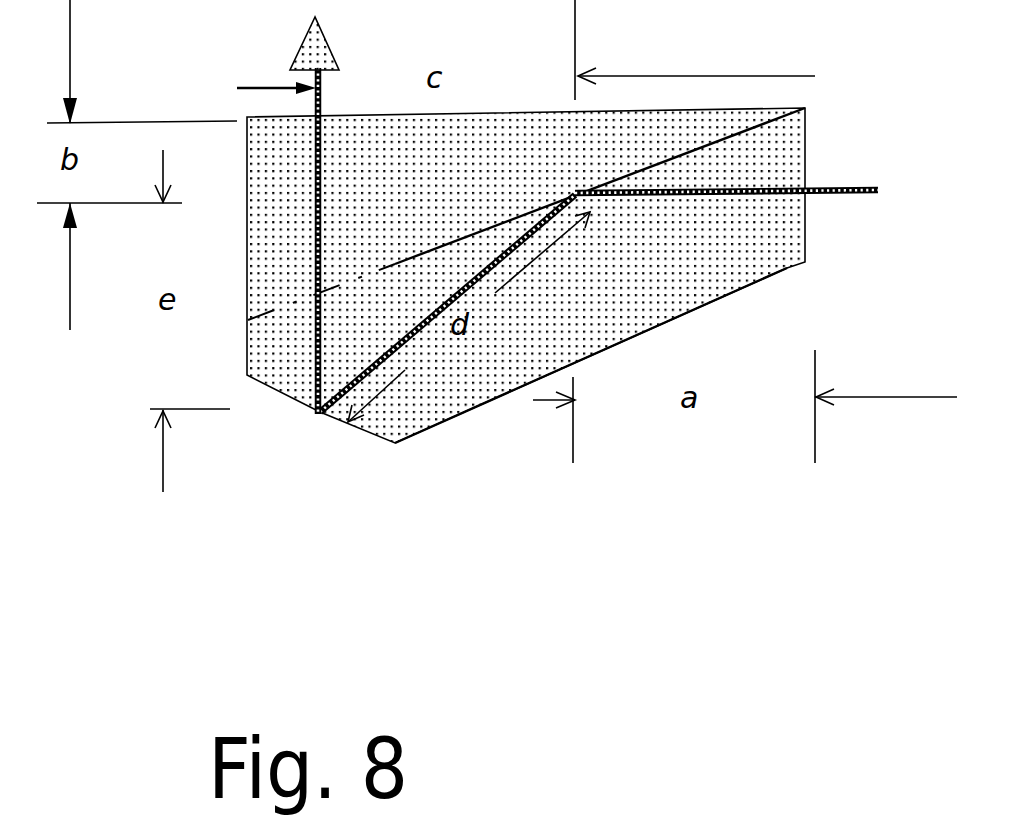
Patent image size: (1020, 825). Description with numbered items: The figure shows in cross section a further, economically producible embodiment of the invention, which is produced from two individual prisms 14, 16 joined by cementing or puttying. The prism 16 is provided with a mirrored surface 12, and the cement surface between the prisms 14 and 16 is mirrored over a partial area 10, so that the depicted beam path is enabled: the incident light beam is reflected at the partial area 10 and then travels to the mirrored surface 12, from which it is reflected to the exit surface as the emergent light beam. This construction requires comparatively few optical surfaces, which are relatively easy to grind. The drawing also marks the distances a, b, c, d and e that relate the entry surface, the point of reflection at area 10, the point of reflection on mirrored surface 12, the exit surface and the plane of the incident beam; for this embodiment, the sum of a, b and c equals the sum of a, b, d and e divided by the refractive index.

The partial area 10 is at (483, 233).
The mirrored surface 12 is at (330, 420).
The prism 14 is at (624, 158).
The prism 16 is at (590, 213).